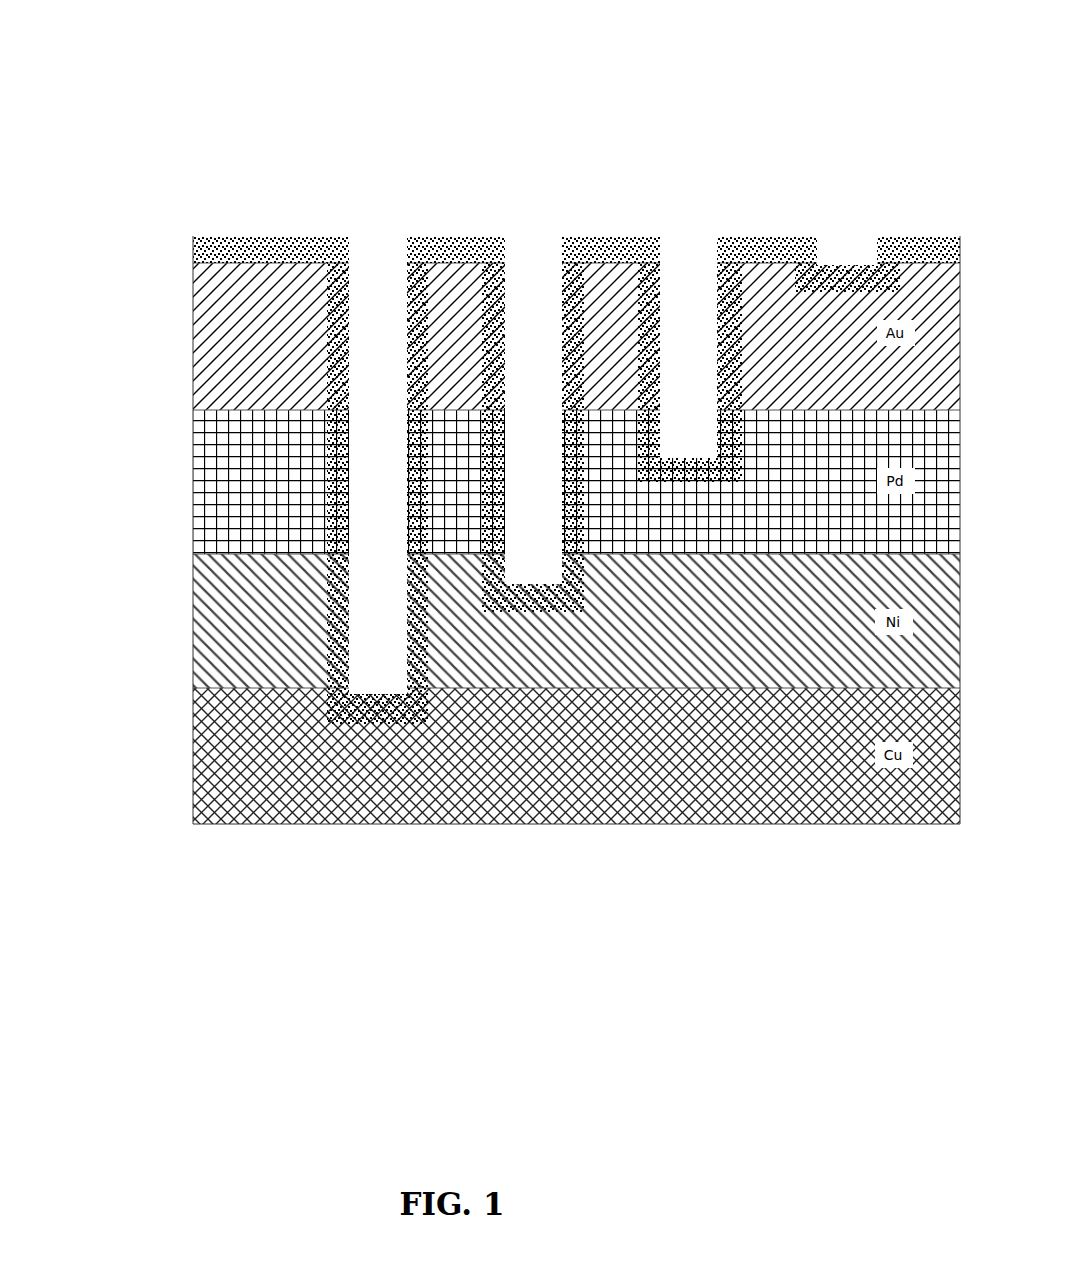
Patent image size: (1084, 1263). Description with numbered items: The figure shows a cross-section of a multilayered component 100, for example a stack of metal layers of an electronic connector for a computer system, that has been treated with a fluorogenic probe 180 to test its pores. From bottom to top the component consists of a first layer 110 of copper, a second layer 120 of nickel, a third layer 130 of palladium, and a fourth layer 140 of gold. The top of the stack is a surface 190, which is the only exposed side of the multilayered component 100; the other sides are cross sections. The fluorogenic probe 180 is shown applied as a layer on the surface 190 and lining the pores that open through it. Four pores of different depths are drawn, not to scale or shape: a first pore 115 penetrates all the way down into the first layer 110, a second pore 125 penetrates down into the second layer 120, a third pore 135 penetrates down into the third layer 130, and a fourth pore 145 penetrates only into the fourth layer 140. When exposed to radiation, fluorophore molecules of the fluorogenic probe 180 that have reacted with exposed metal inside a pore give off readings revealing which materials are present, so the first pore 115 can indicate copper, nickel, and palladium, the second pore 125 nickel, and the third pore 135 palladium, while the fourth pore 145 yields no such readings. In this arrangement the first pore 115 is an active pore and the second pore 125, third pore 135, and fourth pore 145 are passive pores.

The multilayered component 100 is at (682, 36).
The first layer 110 is at (193, 760).
The second layer 120 is at (193, 628).
The third layer 130 is at (193, 475).
The fourth layer 140 is at (193, 355).
The first pore 115 is at (378, 261).
The second pore 125 is at (533, 261).
The third pore 135 is at (687, 261).
The fourth pore 145 is at (832, 261).
The fluorogenic probe 180 is at (918, 238).
The surface 190 is at (297, 302).